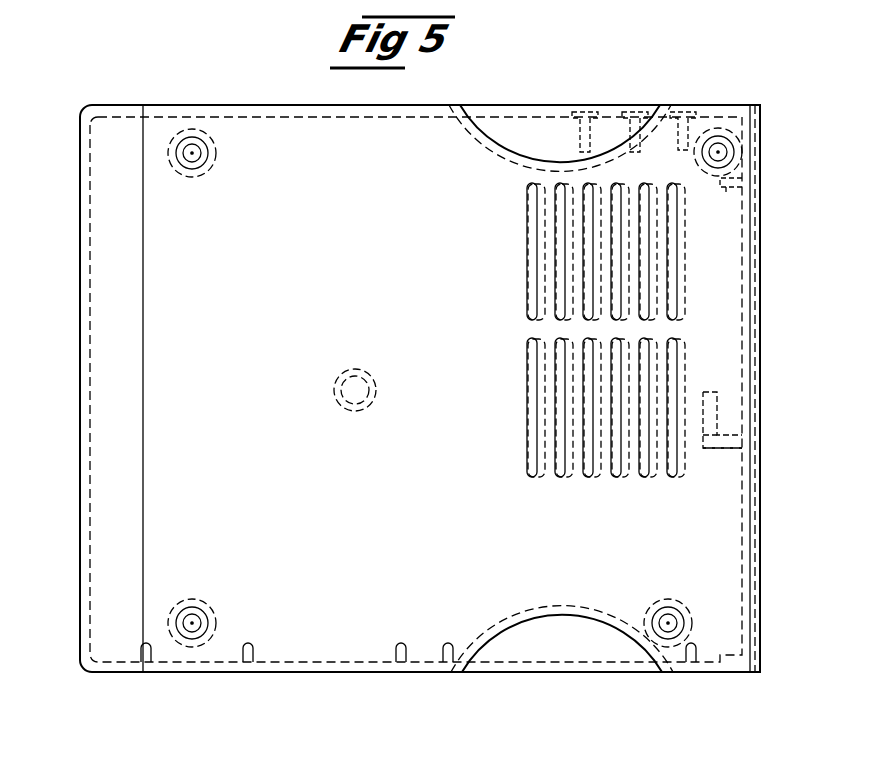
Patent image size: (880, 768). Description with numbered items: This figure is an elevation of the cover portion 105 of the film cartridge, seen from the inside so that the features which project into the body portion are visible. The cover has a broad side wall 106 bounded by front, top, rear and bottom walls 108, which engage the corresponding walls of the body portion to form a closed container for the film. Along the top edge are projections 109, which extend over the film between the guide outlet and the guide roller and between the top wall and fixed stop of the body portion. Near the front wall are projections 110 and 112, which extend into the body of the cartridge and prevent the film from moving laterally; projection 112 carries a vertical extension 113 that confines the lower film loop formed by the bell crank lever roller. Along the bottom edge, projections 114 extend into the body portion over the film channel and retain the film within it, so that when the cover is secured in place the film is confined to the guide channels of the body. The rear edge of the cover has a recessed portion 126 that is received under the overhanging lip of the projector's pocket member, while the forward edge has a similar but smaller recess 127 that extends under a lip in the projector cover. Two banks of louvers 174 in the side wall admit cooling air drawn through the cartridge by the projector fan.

The cover portion 105 is at (298, 103).
The side wall 106 is at (98, 455).
The front, top, rear and bottom walls 108 is at (80, 320).
The projections 109 is at (603, 127).
The projection 110 is at (722, 190).
The projection 112 is at (712, 450).
The vertical extension 113 is at (718, 395).
The projections 114 is at (255, 650).
The recessed portion 126 is at (116, 132).
The recess 127 is at (755, 243).
The louvers 174 is at (527, 265).